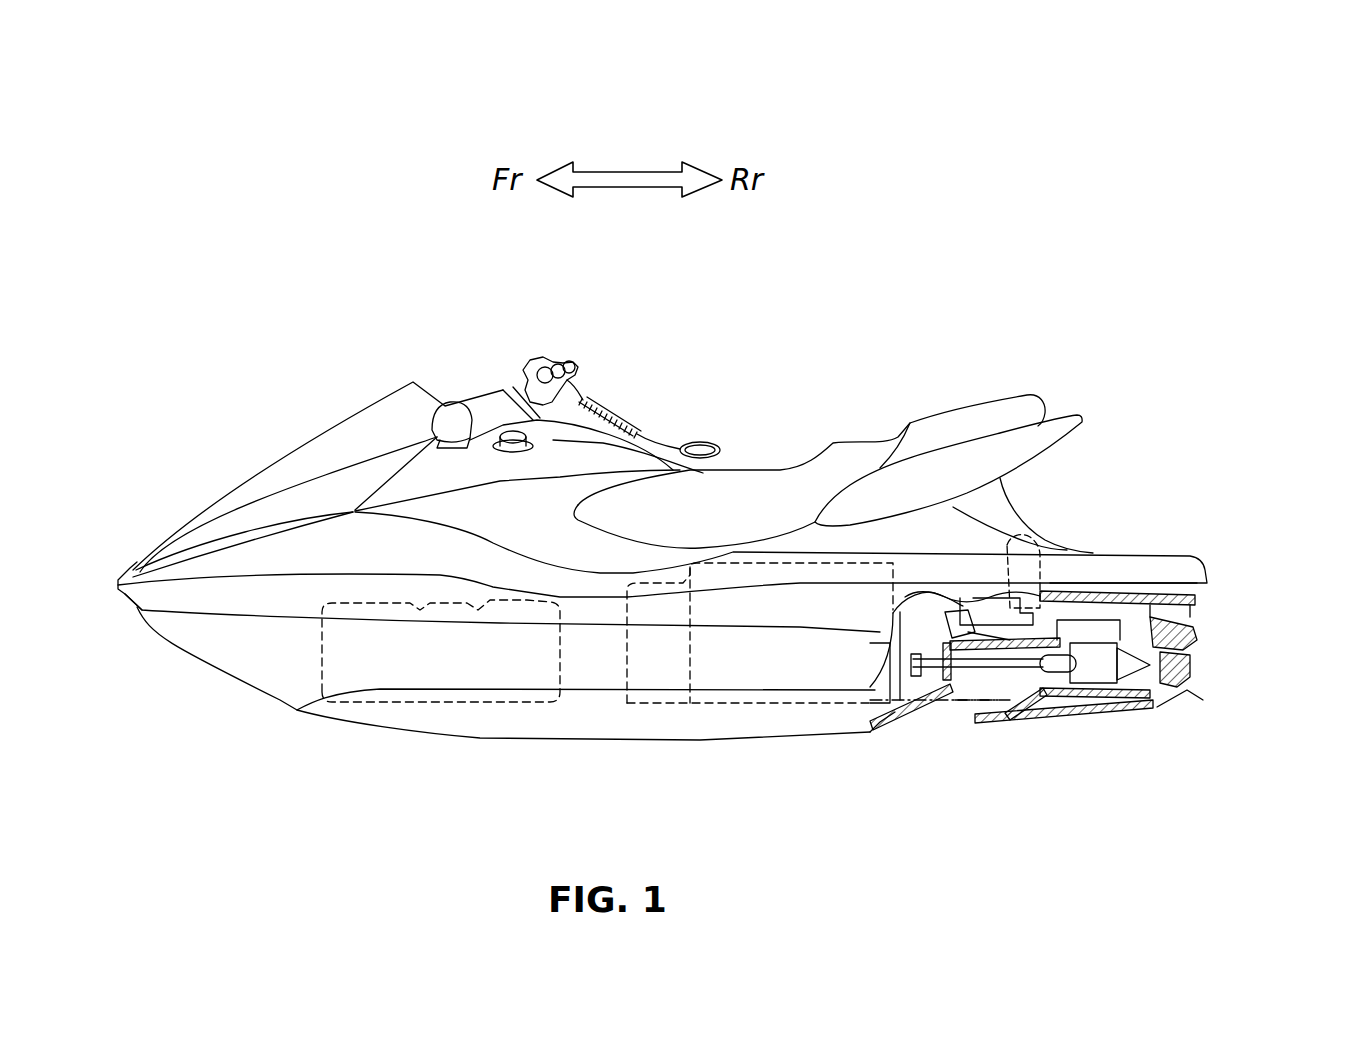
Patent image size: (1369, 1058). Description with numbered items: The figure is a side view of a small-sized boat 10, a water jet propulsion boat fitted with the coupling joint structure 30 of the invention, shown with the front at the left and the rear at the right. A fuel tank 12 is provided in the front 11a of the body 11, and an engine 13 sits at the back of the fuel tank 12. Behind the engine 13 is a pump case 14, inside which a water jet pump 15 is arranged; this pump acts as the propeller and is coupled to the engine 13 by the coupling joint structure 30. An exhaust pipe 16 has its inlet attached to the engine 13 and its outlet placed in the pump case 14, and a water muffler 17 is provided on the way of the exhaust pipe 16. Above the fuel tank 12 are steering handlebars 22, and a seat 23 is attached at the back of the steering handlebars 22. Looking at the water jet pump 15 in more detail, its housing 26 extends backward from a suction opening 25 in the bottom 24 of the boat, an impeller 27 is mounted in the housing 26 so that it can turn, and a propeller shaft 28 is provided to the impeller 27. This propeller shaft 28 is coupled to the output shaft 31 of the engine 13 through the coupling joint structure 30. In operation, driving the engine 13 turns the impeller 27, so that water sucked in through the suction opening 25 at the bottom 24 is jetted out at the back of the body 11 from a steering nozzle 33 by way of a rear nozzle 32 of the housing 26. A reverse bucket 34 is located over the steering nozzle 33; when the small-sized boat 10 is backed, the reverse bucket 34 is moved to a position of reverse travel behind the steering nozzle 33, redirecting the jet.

The small-sized boat 10 is at (380, 262).
The body 11 is at (387, 395).
The front of the body 11a is at (297, 550).
The fuel tank 12 is at (430, 680).
The engine 13 is at (730, 680).
The pump case 14 is at (1080, 588).
The water jet pump 15 is at (1120, 707).
The exhaust pipe 16 is at (942, 597).
The water muffler 17 is at (983, 693).
The steering handlebars 22 is at (570, 365).
The seat 23 is at (783, 477).
The bottom of the boat 24 is at (805, 740).
The suction opening 25 is at (948, 720).
The housing 26 is at (1103, 623).
The impeller 27 is at (1083, 707).
The propeller shaft 28 is at (1012, 720).
The coupling joint structure 30 is at (908, 720).
The output shaft 31 is at (887, 733).
The rear nozzle 32 is at (1150, 600).
The steering nozzle 33 is at (1177, 680).
The reverse bucket 34 is at (1193, 627).